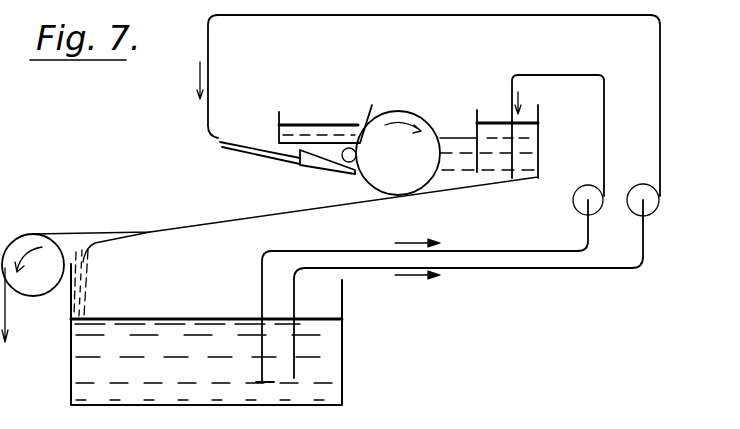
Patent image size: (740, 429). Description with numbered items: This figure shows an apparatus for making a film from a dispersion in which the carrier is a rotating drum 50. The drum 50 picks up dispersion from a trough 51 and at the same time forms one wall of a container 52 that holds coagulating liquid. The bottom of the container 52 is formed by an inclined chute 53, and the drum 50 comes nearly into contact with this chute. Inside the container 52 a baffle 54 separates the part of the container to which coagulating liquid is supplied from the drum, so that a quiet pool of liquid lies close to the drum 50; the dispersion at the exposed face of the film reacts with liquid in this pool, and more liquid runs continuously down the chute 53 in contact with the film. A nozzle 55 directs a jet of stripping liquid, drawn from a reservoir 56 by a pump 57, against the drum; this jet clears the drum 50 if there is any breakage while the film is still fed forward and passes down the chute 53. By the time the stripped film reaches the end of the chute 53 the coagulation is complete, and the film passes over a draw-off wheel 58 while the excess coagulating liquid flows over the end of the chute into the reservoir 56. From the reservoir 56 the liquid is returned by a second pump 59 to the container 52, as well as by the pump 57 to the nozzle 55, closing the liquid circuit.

The drum 50 is at (407, 110).
The trough 51 is at (279, 112).
The container 52 is at (540, 143).
The chute 53 is at (447, 192).
The baffle 54 is at (484, 102).
The nozzle 55 is at (322, 172).
The reservoir 56 is at (343, 337).
The pump 57 is at (637, 214).
The draw-off wheel 58 is at (53, 237).
The pump 59 is at (577, 210).